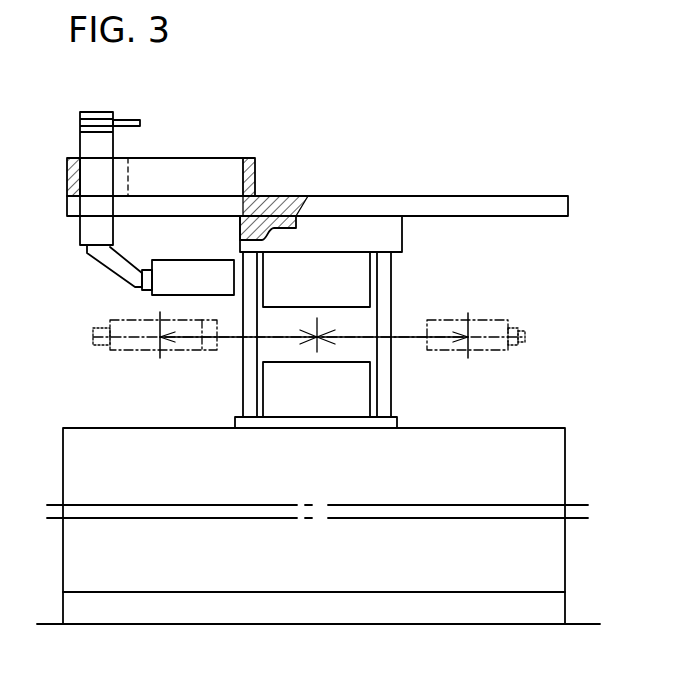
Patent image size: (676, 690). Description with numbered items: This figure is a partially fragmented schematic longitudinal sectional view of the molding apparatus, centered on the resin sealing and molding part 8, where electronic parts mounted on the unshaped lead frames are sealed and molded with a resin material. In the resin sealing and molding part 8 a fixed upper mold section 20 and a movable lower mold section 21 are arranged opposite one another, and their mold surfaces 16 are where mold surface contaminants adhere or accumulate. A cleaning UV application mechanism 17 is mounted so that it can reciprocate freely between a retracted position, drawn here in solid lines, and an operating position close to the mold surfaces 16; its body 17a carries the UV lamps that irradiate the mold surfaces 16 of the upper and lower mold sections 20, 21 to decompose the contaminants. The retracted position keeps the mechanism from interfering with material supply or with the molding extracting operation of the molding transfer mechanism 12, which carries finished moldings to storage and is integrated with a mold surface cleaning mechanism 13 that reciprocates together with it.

The resin sealing and molding part 8 is at (478, 136).
The molding transfer mechanism 12 is at (140, 340).
The mold surface cleaning mechanism 13 is at (208, 357).
The mold surfaces 16 is at (342, 307).
The cleaning UV application mechanism 17 is at (117, 278).
The body 17a is at (207, 275).
The fixed upper mold section 20 is at (325, 278).
The movable lower mold section 21 is at (312, 388).